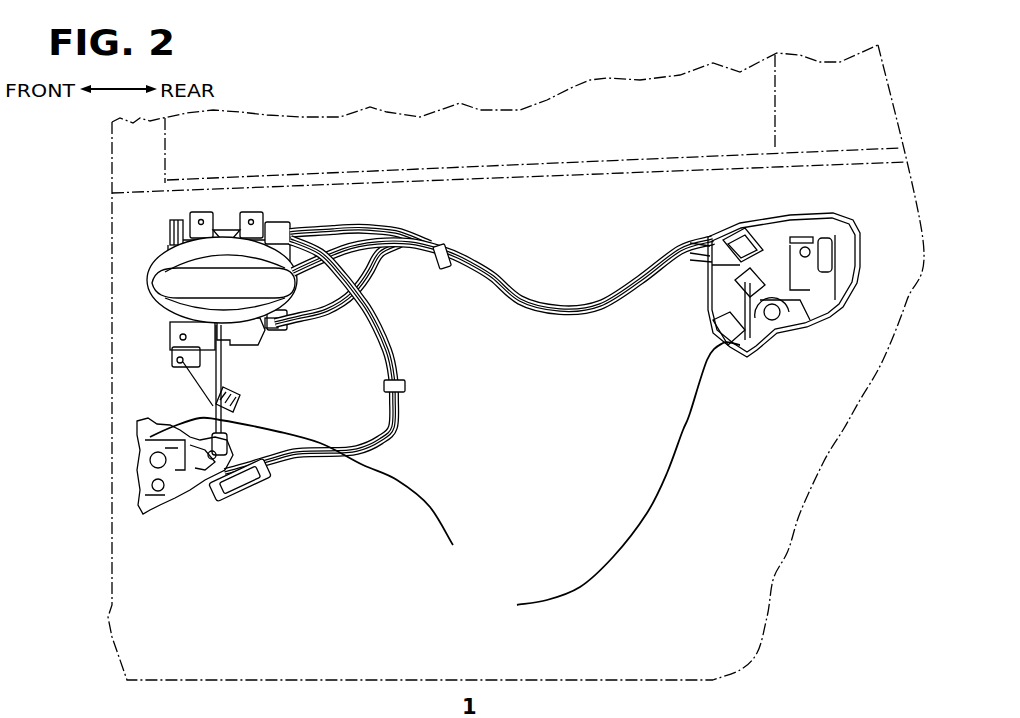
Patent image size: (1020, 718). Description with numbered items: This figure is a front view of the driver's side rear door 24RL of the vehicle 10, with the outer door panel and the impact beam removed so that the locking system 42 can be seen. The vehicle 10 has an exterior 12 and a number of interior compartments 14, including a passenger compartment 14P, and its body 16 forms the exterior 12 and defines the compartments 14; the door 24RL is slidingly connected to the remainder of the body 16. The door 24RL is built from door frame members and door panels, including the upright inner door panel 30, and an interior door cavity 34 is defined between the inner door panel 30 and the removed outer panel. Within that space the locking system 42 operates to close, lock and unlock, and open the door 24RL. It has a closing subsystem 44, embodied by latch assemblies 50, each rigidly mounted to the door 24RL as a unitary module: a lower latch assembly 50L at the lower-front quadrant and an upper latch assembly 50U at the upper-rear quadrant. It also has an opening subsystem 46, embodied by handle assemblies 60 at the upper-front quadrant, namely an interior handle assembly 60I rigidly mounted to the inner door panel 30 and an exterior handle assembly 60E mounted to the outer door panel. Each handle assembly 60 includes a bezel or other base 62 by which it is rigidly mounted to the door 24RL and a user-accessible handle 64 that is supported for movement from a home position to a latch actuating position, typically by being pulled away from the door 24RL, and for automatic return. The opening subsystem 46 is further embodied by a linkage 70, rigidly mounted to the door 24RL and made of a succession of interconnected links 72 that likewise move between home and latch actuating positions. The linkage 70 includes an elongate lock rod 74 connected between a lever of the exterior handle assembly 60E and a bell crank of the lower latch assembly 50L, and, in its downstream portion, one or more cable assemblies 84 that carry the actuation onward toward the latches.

The vehicle 10 is at (516, 362).
The exterior 12 is at (229, 155).
The interior compartments 14 is at (495, 94).
The passenger compartment 14P is at (480, 140).
The body 16 is at (793, 460).
The driver's side rear door 24RL is at (780, 503).
The inner door panel 30 is at (758, 573).
The interior door cavity 34 is at (742, 625).
The locking system 42 is at (568, 268).
The closing subsystem 44 is at (438, 492).
The opening subsystem 46 is at (475, 337).
The latch assemblies 50 is at (445, 478).
The lower latch assembly 50L is at (330, 496).
The upper latch assembly 50U is at (440, 528).
The handle assemblies 60 is at (284, 333).
The exterior handle assembly 60E is at (284, 297).
The interior handle assembly 60I is at (290, 312).
The base 62 is at (157, 262).
The handle 64 is at (147, 280).
The linkage 70 is at (443, 404).
The links 72 is at (469, 353).
The lock rod 74 is at (222, 372).
The cable assemblies 84 is at (598, 305).